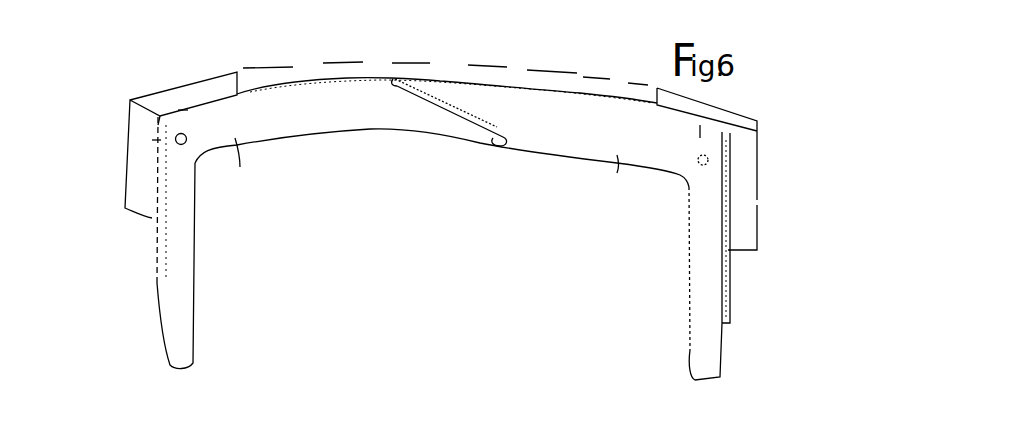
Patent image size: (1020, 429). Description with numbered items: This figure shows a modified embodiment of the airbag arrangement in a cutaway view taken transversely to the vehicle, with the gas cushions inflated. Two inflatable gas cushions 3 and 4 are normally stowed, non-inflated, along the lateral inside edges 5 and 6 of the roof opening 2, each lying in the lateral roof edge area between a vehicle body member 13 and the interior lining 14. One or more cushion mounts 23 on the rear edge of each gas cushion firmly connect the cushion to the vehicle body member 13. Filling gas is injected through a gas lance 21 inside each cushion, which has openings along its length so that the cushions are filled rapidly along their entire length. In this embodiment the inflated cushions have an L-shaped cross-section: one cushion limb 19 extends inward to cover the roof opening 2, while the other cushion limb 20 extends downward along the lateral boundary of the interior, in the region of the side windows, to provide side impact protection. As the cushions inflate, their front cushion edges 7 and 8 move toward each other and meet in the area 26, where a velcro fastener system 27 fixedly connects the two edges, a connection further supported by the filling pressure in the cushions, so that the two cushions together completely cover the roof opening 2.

The roof opening 2 is at (455, 63).
The inflatable gas cushion 3 is at (245, 167).
The inflatable gas cushion 4 is at (614, 183).
The lateral inside edge 5 is at (242, 78).
The lateral inside edge 6 is at (652, 96).
The front cushion edge 7 is at (483, 140).
The front cushion edge 8 is at (434, 92).
The vehicle body member 13 is at (149, 100).
The interior lining 14 is at (155, 250).
The cushion limb 19 is at (348, 125).
The cushion limb 20 is at (182, 302).
The gas lance 21 is at (185, 134).
The cushion mount 23 is at (184, 114).
The area where the front cushion edges meet 26 is at (437, 112).
The velcro fastener system 27 is at (468, 115).